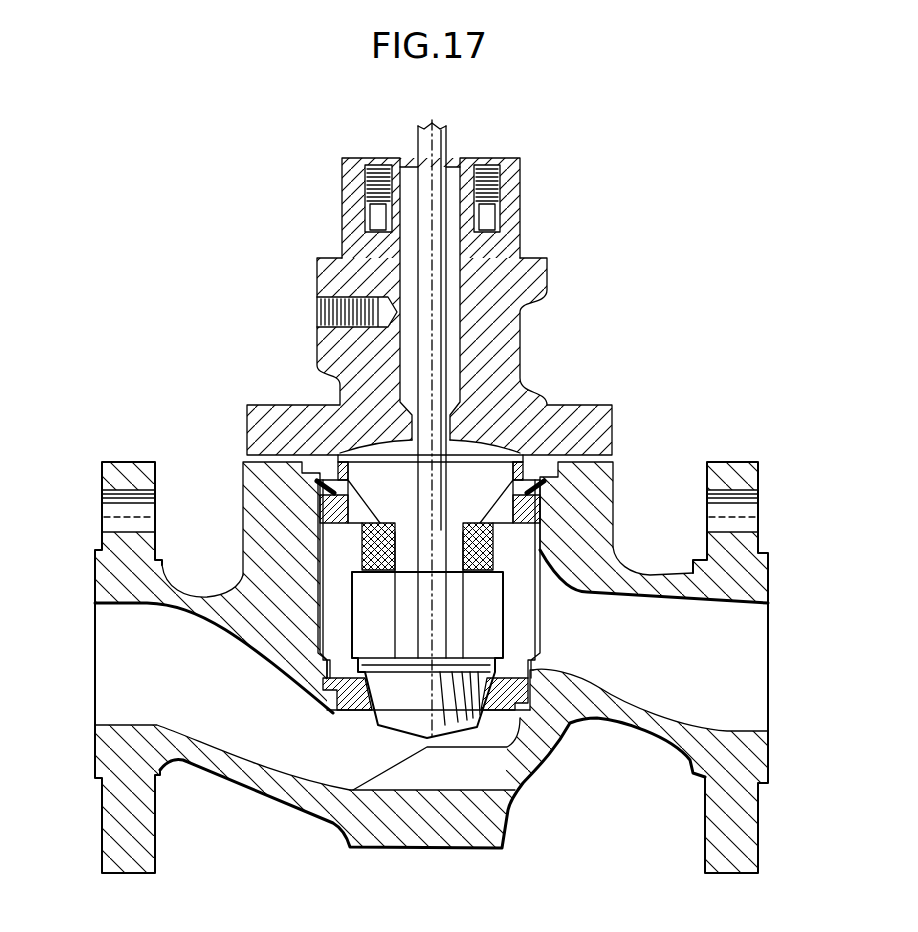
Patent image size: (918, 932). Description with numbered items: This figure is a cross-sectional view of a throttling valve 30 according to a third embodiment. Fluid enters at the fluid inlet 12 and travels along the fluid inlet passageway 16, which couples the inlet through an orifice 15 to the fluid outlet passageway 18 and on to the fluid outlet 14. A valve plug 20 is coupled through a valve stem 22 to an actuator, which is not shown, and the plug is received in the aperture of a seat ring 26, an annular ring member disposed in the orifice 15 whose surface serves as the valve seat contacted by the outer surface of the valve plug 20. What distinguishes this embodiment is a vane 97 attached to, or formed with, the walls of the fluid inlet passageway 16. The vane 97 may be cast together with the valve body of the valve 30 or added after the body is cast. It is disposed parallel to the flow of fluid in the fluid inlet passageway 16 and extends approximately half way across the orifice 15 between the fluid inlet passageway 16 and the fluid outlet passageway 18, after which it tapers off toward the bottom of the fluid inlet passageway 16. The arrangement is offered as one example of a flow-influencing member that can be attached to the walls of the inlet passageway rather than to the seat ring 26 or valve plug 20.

The fluid inlet 12 is at (95, 622).
The fluid outlet 14 is at (768, 630).
The orifice 15 is at (349, 729).
The fluid inlet passageway 16 is at (143, 683).
The fluid outlet passageway 18 is at (730, 685).
The valve plug 20 is at (412, 713).
The valve stem 22 is at (437, 430).
The seat ring 26 is at (562, 758).
The throttling valve 30 is at (593, 196).
The vane 97 is at (487, 767).